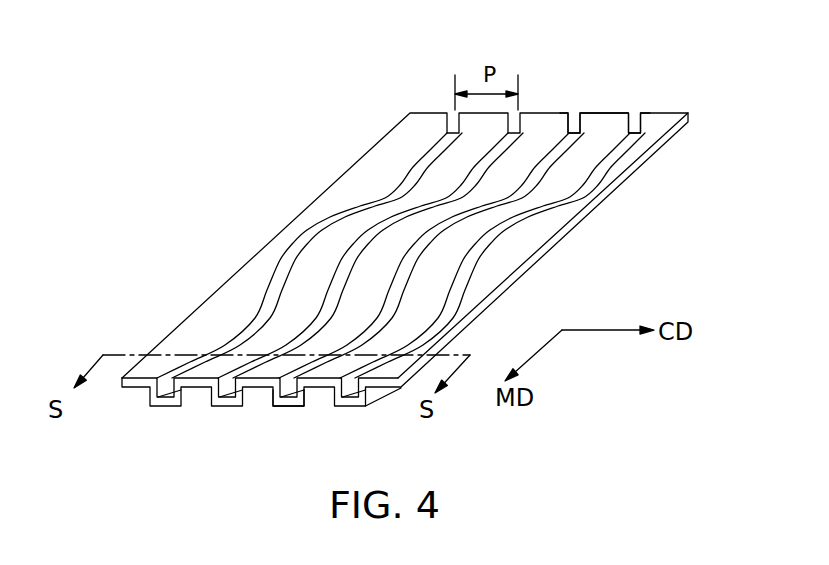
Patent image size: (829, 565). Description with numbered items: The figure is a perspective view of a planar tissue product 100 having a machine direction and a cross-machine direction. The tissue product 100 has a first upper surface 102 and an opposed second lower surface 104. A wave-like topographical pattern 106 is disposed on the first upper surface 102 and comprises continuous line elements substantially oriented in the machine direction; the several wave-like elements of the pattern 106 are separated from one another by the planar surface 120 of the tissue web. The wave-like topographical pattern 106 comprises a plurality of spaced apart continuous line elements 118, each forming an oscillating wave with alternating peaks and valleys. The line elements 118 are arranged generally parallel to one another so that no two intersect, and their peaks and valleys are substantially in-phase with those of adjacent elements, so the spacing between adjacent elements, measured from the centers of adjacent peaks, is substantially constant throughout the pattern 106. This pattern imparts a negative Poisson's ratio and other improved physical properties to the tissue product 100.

The tissue product 100 is at (405, 245).
The first upper surface 102 is at (405, 240).
The second lower surface 104 is at (405, 293).
The wave-like topographical pattern 106 is at (292, 260).
The continuous line element 118 is at (281, 403).
The planar surface 120 is at (601, 140).